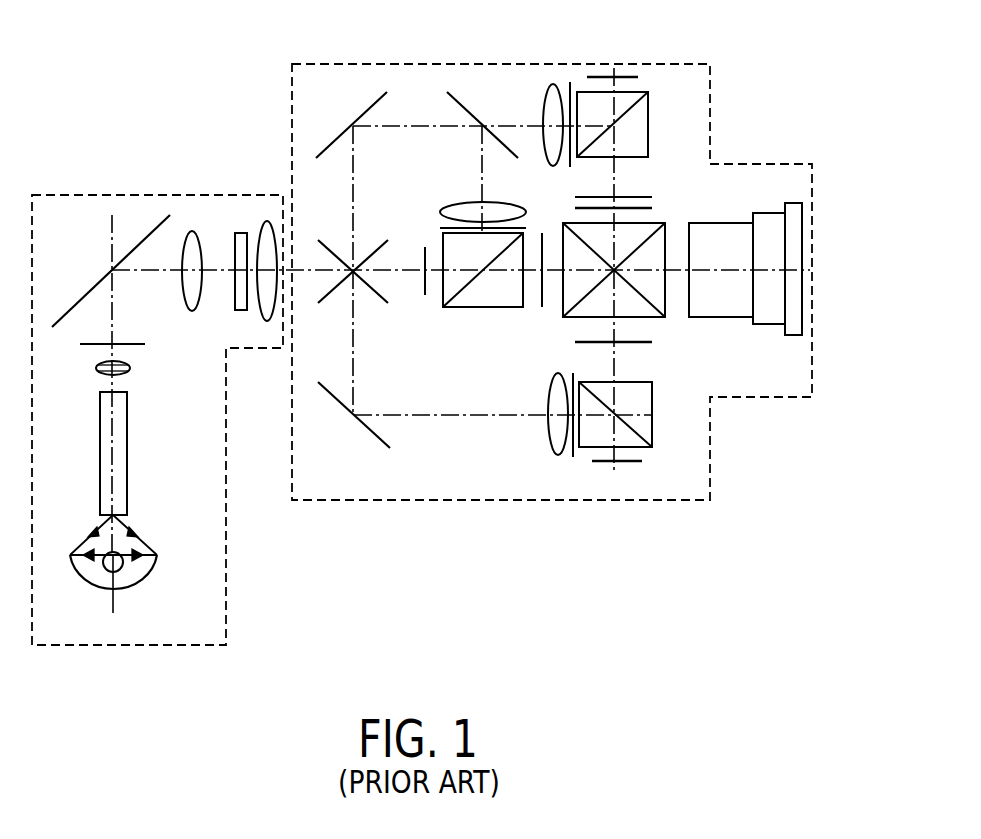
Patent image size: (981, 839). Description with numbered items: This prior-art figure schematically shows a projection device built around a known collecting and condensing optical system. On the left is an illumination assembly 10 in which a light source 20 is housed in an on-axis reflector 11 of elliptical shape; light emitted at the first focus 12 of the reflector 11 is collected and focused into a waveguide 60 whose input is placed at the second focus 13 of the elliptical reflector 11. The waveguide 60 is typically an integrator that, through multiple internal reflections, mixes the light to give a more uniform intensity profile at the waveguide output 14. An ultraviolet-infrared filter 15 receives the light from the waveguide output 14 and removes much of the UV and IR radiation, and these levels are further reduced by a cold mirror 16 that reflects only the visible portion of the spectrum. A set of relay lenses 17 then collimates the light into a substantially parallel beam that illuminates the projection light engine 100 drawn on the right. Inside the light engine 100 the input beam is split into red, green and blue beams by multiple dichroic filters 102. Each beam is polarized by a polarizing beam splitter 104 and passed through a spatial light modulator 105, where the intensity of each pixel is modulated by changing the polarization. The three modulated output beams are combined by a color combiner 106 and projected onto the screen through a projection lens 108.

The illumination assembly 10 is at (124, 645).
The on-axis reflector 11 is at (93, 590).
The first focus 12 is at (120, 572).
The second focus 13 is at (128, 522).
The waveguide output 14 is at (124, 392).
The ultraviolet-infrared (UV-IR) filter 15 is at (90, 380).
The cold mirror 16 is at (95, 287).
The relay lenses 17 is at (190, 232).
The light source 20 is at (140, 556).
The waveguide 60 is at (100, 463).
The projection light engine 100 is at (485, 500).
The dichroic filters 102 is at (484, 124).
The polarizing beam splitter (PBS) 104 is at (475, 308).
The spatial light modulator (SLM) 105 is at (424, 268).
The color combiner 106 is at (665, 305).
The projection lens 108 is at (795, 203).